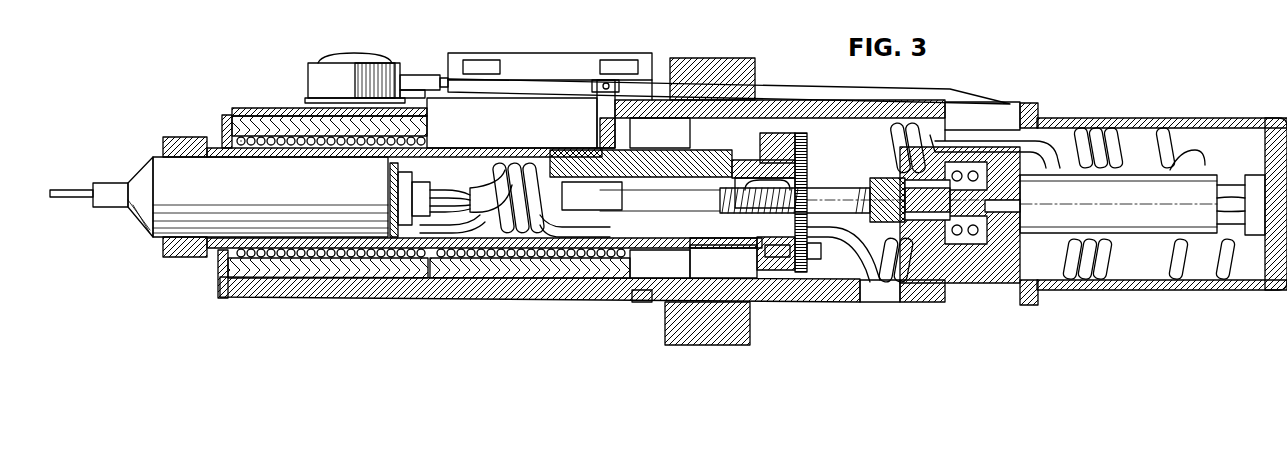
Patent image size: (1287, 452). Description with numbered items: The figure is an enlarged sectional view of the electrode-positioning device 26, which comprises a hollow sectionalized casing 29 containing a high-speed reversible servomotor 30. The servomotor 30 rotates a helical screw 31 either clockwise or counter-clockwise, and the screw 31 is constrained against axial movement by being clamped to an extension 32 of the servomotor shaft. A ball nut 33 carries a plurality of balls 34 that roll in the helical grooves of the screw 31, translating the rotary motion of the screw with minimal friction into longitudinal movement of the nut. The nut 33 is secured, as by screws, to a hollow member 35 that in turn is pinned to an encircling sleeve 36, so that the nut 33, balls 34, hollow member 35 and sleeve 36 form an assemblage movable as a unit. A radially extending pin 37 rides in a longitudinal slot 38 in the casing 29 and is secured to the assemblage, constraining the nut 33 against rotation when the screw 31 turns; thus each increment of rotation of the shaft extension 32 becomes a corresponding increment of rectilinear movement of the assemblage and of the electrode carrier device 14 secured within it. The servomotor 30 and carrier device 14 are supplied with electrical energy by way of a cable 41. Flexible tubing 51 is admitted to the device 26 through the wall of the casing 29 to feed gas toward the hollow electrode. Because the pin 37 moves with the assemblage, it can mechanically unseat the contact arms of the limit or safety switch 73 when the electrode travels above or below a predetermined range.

The electrode carrier device 14 is at (300, 193).
The electrode-positioning device 26 is at (862, 308).
The hollow sectionalized casing 29 is at (630, 302).
The high-speed reversible servomotor 30 is at (1108, 201).
The helical screw 31 is at (838, 190).
The extension of the servomotor shaft 32 is at (1017, 188).
The ball nut 33 is at (757, 238).
The balls 34 is at (780, 190).
The hollow member 35 is at (708, 163).
The encircling sleeve 36 is at (650, 152).
The radially extending pin 37 is at (598, 130).
The longitudinal slot 38 is at (482, 111).
The cable 41 is at (1130, 165).
The flexible tubing 51 is at (389, 212).
The limit or safety switch 73 is at (473, 62).